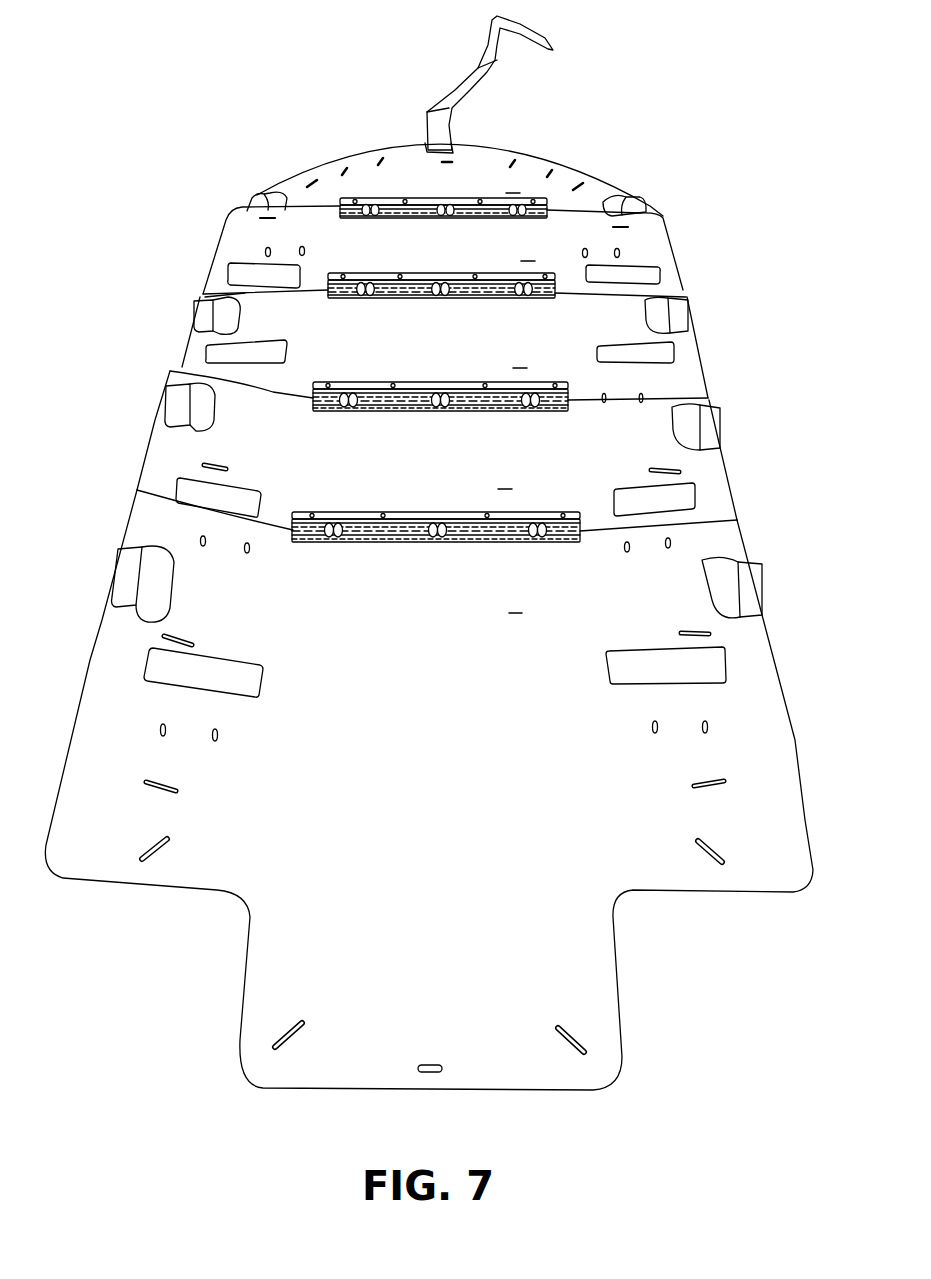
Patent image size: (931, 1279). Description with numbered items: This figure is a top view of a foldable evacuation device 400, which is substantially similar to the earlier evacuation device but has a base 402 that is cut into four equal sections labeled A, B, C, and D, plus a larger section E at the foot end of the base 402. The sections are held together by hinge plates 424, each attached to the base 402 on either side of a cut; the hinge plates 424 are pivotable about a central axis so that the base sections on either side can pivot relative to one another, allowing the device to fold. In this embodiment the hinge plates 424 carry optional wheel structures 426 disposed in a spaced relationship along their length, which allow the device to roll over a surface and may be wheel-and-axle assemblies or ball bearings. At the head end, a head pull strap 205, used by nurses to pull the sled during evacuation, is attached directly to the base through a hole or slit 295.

The evacuation device 400 is at (429, 553).
The base 402 is at (497, 157).
The head pull strap 205 is at (470, 78).
The hole or slit 295 is at (423, 143).
The hinge plate 424 is at (431, 530).
The wheel structure 426 is at (327, 537).